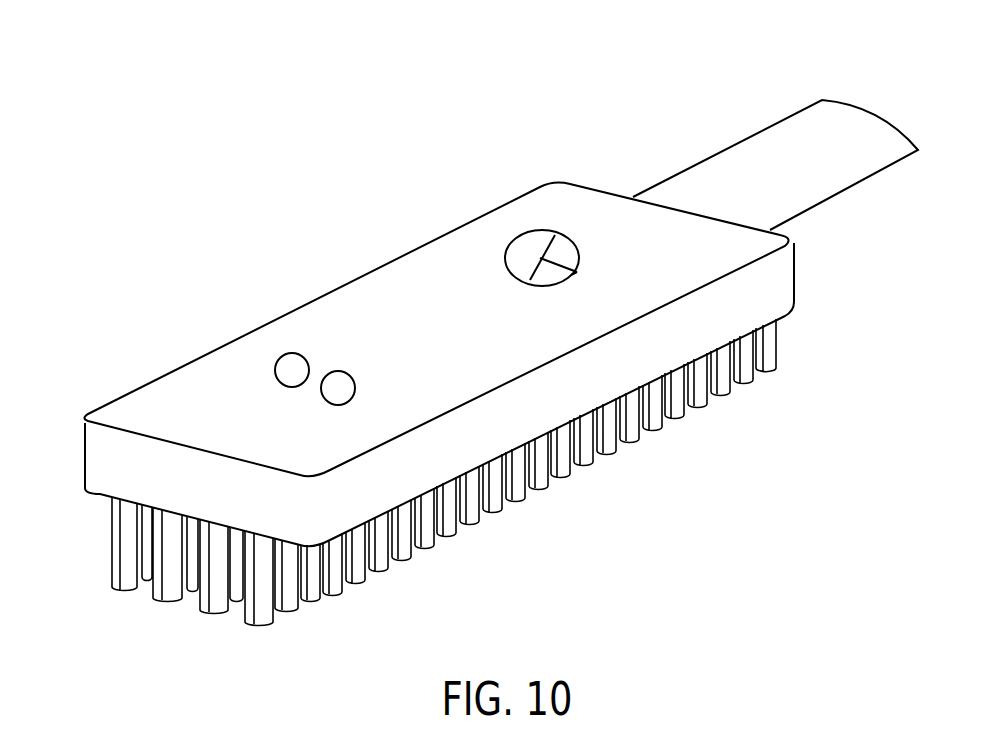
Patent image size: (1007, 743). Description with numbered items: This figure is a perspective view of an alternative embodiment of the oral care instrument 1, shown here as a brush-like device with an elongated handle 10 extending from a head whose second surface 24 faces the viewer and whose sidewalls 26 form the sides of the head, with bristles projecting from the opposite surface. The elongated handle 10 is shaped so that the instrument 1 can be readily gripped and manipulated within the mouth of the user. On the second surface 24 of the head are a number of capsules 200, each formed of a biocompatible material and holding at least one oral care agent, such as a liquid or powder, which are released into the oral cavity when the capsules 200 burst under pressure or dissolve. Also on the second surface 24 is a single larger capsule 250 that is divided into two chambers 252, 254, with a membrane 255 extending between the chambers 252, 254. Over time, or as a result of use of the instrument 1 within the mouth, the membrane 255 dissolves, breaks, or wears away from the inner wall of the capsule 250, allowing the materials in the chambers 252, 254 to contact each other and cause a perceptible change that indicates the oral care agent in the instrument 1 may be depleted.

The oral care instrument 1 is at (254, 129).
The elongated handle 10 is at (833, 110).
The second surface 24 is at (570, 182).
The sidewalls 26 is at (93, 467).
The capsules 200 is at (275, 373).
The capsule 250 is at (508, 267).
The chamber 252 is at (572, 253).
The chamber 254 is at (522, 235).
The membrane 255 is at (577, 272).